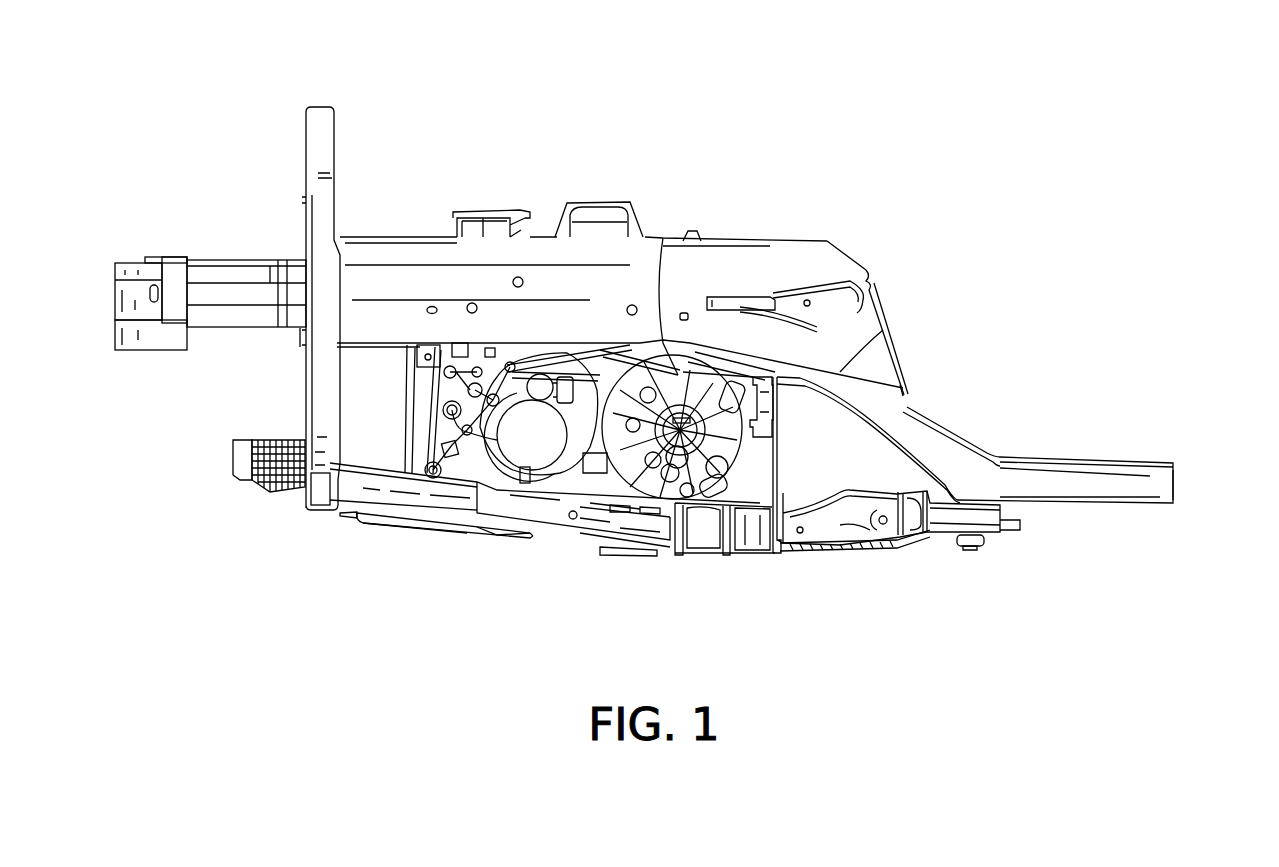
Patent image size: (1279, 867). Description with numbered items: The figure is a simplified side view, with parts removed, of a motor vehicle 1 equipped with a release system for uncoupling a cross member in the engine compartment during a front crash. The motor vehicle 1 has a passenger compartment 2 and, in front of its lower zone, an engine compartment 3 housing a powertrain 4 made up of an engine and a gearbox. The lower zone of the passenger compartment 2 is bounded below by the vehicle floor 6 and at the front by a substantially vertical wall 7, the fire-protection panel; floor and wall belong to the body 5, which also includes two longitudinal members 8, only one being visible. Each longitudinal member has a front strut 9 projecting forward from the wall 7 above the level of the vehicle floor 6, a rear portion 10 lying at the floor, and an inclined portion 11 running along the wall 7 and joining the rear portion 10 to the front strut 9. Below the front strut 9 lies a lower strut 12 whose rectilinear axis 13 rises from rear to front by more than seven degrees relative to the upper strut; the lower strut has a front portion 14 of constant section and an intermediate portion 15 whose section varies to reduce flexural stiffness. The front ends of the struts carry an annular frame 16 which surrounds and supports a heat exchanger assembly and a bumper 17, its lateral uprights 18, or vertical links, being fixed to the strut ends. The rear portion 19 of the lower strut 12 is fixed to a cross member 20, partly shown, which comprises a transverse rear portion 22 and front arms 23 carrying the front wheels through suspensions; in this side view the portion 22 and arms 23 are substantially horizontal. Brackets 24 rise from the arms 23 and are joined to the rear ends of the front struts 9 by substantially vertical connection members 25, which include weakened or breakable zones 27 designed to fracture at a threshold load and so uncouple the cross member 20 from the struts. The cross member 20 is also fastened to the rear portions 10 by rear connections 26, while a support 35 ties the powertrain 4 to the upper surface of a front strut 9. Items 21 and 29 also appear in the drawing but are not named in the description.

The motor vehicle 1 is at (1076, 338).
The passenger compartment 2 is at (1012, 278).
The engine compartment 3 is at (438, 170).
The powertrain 4 is at (661, 250).
The body 5 is at (1067, 493).
The vehicle floor 6 is at (1100, 457).
The wall 7 is at (897, 344).
The longitudinal members 8 is at (1180, 490).
The front struts 9 is at (484, 252).
The rear portions 10 is at (1098, 480).
The inclined portions 11 is at (914, 403).
The lower struts 12 is at (543, 527).
The rectilinear axes 13 is at (345, 530).
The front portion 14 is at (413, 510).
The intermediate portion 15 is at (497, 507).
The frame 16 is at (294, 150).
The bumper 17 is at (147, 352).
The lateral uprights 18 is at (320, 360).
The rear portions 19 is at (593, 540).
The cross member 20 is at (886, 572).
The plate lower flange 21 is at (440, 533).
The transverse rear portion 22 is at (830, 550).
The front arms 23 is at (697, 555).
The brackets 24 is at (777, 447).
The connection members 25 is at (785, 398).
The rear connections 26 is at (970, 546).
The weakened or breakable zones 27 is at (772, 377).
The brace 29 is at (837, 340).
The support 35 is at (603, 197).